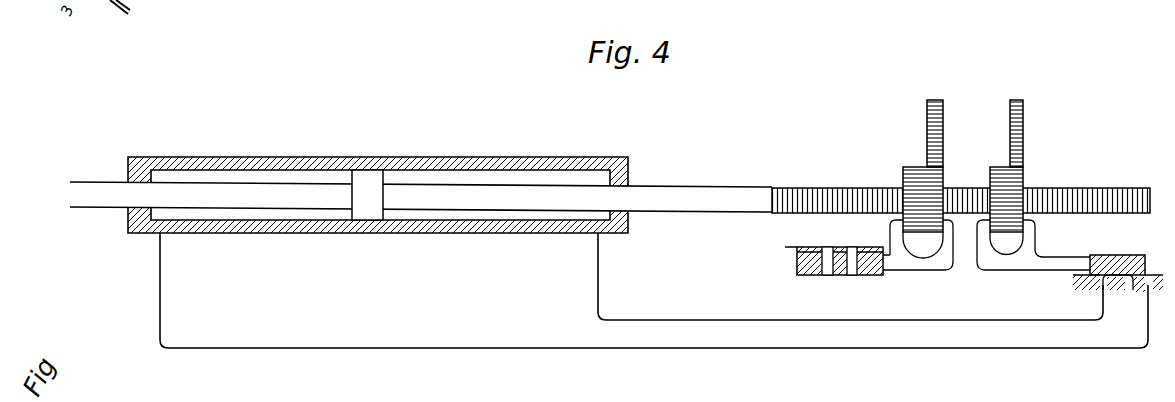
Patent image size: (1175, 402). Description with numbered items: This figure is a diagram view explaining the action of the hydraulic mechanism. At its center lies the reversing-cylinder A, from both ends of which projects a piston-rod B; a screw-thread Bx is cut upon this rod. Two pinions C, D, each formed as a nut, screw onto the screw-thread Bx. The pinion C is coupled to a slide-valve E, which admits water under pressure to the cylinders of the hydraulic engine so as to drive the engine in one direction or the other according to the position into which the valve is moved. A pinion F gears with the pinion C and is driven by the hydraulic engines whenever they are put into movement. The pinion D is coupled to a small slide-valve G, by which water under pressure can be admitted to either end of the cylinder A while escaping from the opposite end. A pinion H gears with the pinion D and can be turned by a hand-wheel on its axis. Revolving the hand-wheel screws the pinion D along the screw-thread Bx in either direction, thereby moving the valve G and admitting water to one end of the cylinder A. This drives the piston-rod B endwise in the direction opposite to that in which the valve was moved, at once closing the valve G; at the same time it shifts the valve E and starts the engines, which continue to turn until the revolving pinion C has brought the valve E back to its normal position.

The reversing-cylinder A is at (378, 196).
The piston-rod B is at (421, 195).
The screw-thread Bx is at (961, 200).
The pinion C is at (918, 218).
The pinion D is at (1033, 218).
The slide-valve E is at (834, 253).
The pinion F is at (942, 133).
The small slide-valve G is at (1118, 267).
The pinion H is at (1025, 133).